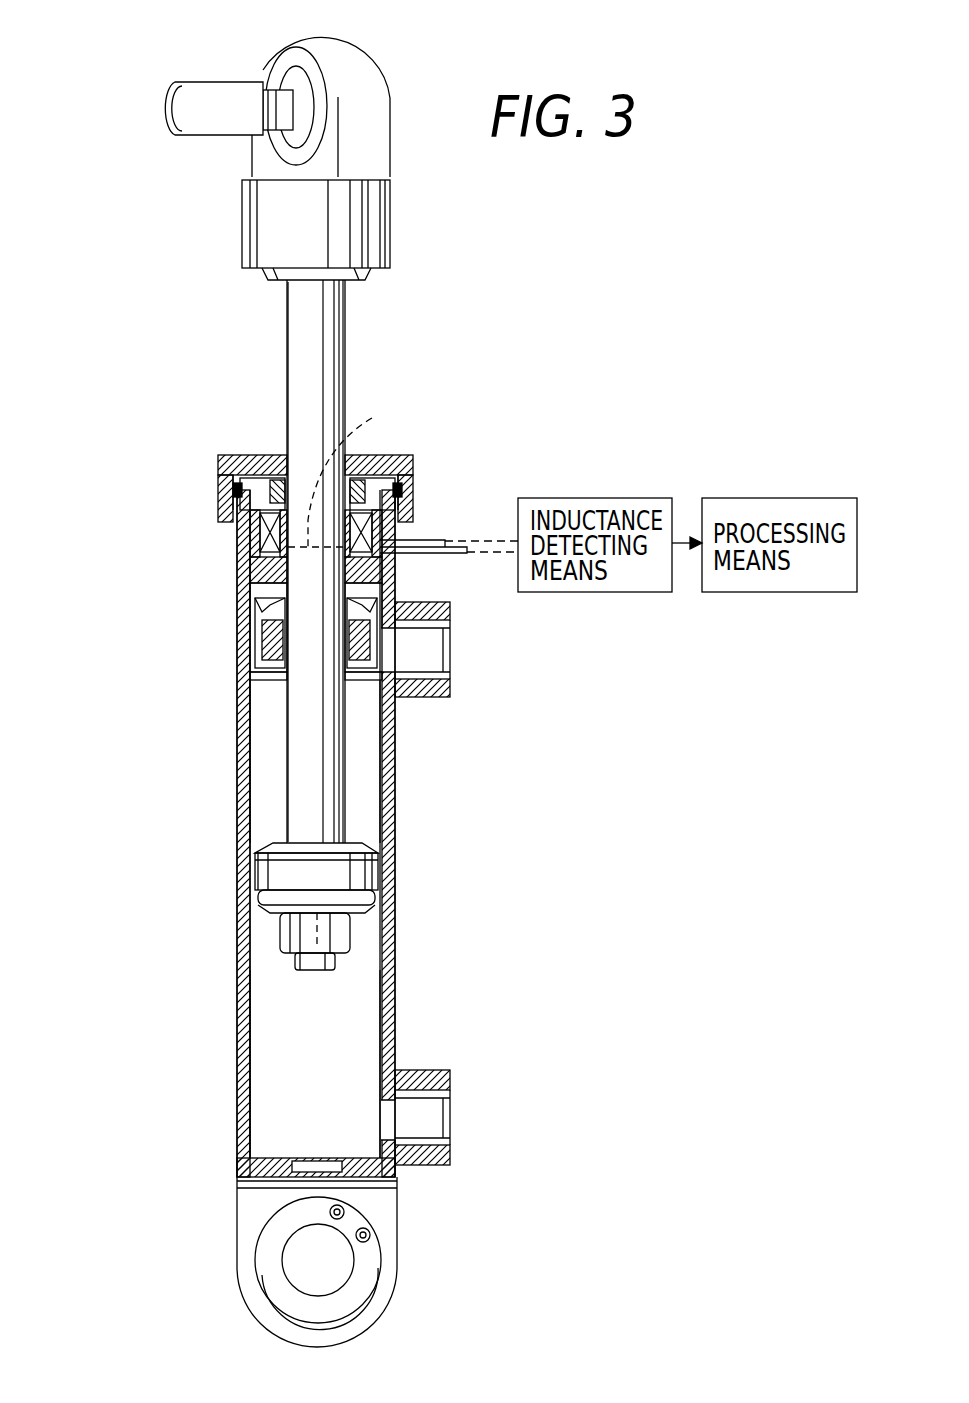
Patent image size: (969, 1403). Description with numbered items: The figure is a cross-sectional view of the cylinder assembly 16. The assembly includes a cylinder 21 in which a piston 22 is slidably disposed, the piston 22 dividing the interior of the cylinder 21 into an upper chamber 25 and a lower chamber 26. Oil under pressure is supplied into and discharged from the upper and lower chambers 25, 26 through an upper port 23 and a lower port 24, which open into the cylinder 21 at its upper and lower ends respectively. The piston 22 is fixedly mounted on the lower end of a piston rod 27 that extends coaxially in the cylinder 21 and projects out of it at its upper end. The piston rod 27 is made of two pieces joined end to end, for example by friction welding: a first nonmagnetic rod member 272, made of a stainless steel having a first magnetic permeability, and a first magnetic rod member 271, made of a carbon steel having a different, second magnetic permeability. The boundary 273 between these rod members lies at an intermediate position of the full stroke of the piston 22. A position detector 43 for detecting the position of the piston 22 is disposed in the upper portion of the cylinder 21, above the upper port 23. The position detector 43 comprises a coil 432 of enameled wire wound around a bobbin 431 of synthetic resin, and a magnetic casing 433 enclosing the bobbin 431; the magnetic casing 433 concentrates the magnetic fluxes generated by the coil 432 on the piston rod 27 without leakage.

The cylinder assembly 16 is at (58, 658).
The cylinder 21 is at (395, 810).
The piston 22 is at (378, 878).
The upper port 23 is at (445, 655).
The lower port 24 is at (440, 1125).
The upper chamber 25 is at (362, 750).
The lower chamber 26 is at (365, 1040).
The piston rod 27 is at (357, 367).
The first magnetic rod member 271 is at (300, 348).
The first nonmagnetic rod member 272 is at (297, 790).
The boundary 273 is at (350, 670).
The position detector 43 is at (116, 532).
The bobbin 431 is at (233, 578).
The coil 432 is at (232, 535).
The magnetic casing 433 is at (232, 618).